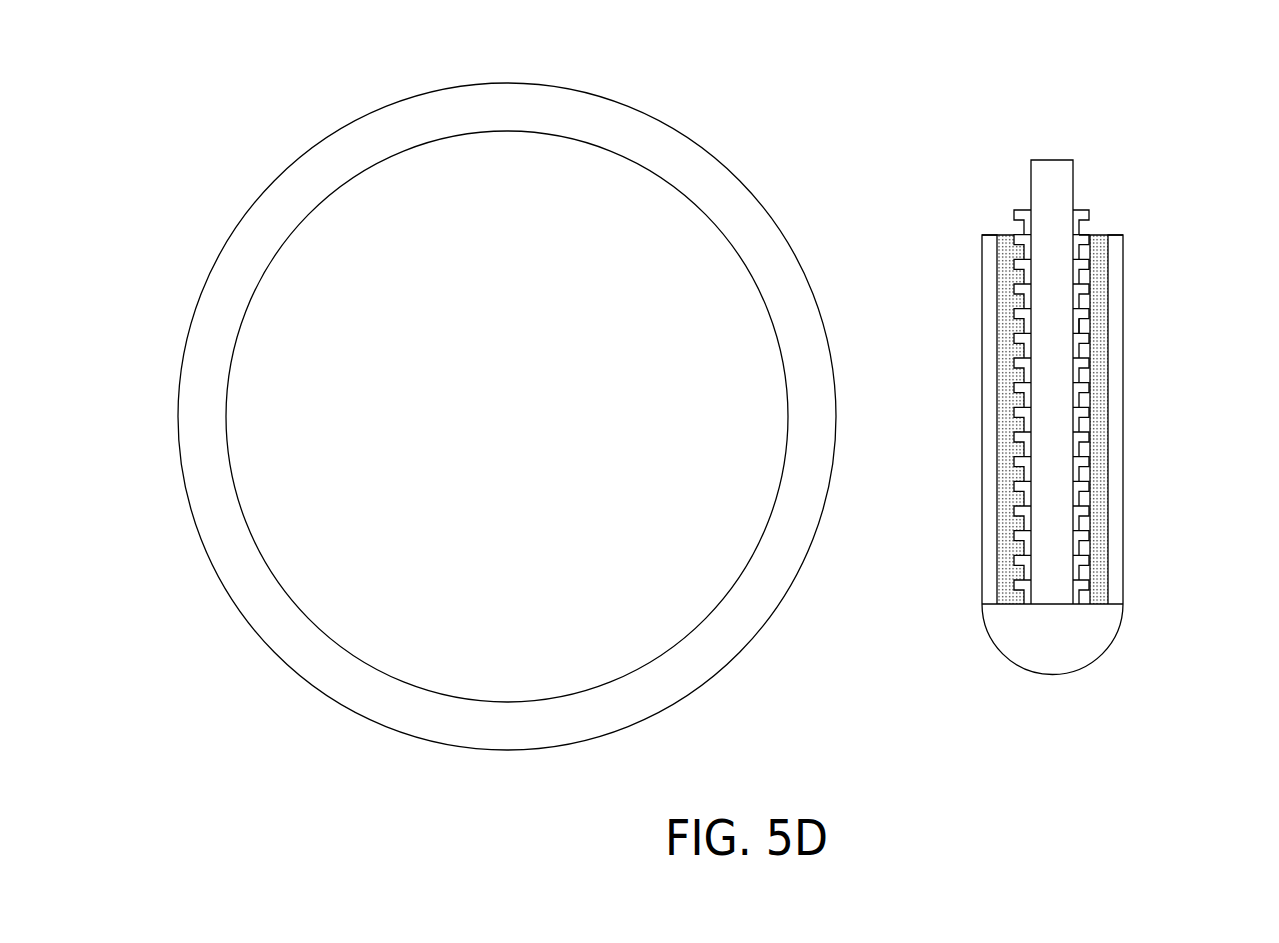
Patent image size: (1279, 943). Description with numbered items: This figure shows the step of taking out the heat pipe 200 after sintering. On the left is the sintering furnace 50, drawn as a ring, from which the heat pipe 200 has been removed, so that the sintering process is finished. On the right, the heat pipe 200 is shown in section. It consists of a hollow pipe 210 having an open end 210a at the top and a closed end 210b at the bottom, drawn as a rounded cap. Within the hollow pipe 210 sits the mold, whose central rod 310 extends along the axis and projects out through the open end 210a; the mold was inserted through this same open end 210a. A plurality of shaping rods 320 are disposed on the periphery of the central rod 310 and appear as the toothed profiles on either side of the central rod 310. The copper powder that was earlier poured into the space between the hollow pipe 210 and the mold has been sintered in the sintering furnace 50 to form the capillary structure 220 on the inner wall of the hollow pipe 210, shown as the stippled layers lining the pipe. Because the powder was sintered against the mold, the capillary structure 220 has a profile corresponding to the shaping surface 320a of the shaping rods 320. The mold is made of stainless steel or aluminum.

The sintering furnace 50 is at (683, 167).
The heat pipe 200 is at (1128, 460).
The hollow pipe 210 is at (1113, 393).
The open end 210a is at (1102, 233).
The closed end 210b is at (1100, 658).
The capillary structure 220 is at (1098, 447).
The central rod 310 is at (1047, 175).
The shaping rods 320 is at (1077, 302).
The shaping surface 320a is at (1082, 323).